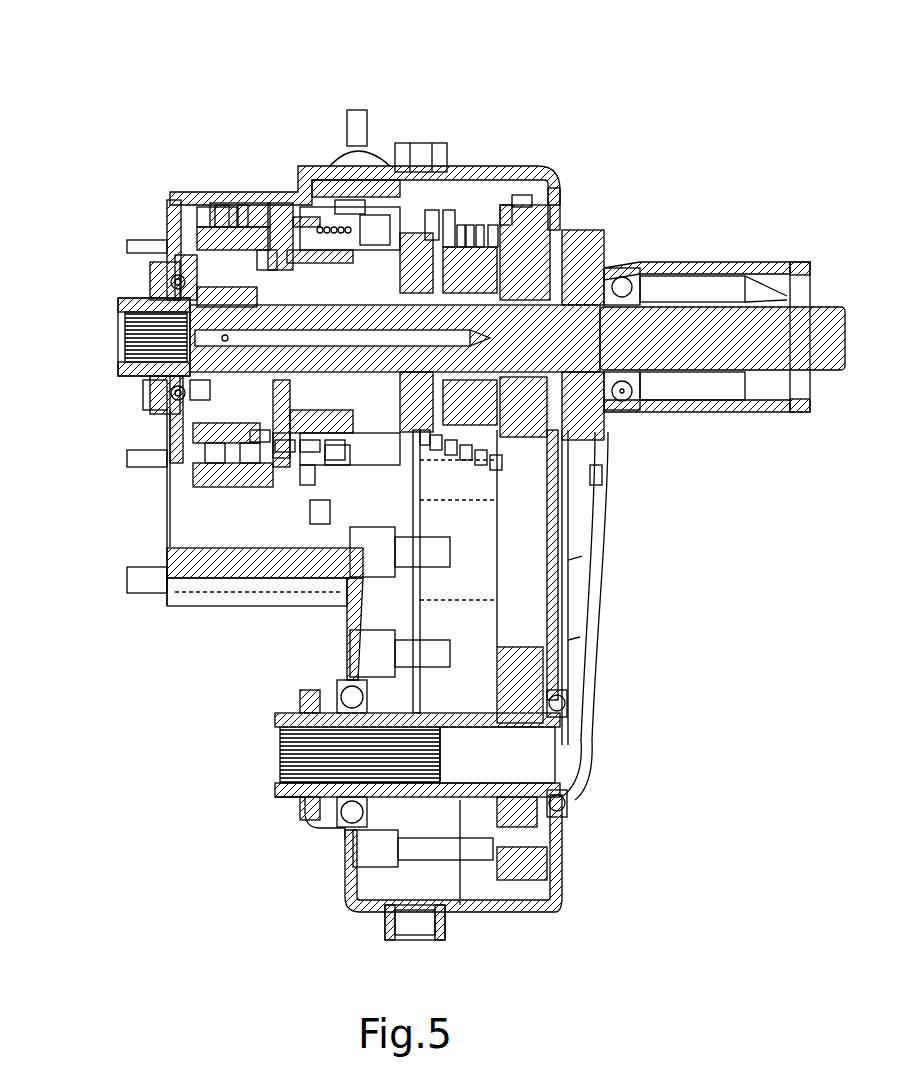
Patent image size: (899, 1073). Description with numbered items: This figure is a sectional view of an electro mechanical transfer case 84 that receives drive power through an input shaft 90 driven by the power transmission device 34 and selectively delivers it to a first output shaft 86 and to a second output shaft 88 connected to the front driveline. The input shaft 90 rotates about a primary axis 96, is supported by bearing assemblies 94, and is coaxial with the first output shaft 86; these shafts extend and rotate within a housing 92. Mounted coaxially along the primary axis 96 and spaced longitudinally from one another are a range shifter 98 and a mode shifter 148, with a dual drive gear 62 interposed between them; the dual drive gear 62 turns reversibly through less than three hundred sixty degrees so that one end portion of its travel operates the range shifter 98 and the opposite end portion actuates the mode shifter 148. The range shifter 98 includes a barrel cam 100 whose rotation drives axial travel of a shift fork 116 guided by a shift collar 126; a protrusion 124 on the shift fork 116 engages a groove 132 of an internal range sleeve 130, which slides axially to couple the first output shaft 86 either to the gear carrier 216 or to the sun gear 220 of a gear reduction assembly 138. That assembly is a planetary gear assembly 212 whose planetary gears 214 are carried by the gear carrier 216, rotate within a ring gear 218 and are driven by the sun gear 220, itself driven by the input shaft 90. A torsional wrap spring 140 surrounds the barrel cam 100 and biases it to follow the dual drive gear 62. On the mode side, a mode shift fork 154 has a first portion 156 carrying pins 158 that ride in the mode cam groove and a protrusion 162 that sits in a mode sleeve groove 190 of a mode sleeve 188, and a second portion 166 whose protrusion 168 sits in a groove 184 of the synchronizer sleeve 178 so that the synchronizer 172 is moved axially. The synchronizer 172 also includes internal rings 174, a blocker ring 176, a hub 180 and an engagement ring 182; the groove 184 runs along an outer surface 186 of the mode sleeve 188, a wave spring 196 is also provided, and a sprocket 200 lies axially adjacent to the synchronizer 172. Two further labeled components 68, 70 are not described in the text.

The power transmission device 34 is at (337, 465).
The dual drive gear 62 is at (350, 200).
The second clutch plate 68 is at (363, 222).
The clutch pack 70 is at (325, 213).
The electro mechanical transfer case 84 is at (628, 88).
The first output shaft 86 is at (200, 392).
The second output shaft 88 is at (540, 772).
The input shaft 90 is at (122, 306).
The housing 92 is at (535, 176).
The bearing assemblies 94 is at (150, 400).
The primary axis 96 is at (126, 352).
The range shifter 98 is at (282, 205).
The barrel cam 100 is at (285, 442).
The shift fork 116 is at (268, 250).
The protrusion 124 is at (306, 470).
The shift collar 126 is at (262, 432).
The internal range sleeve 130 is at (224, 205).
The groove 132 is at (246, 205).
The gear reduction assembly 138 is at (226, 212).
The torsional wrap spring 140 is at (318, 510).
The mode shifter 148 is at (471, 228).
The mode shift fork 154 is at (430, 213).
The first portion 156 is at (607, 433).
The first and second pin 158 is at (372, 178).
The protrusion 162 is at (392, 205).
The second portion 166 is at (481, 228).
The protrusion 168 is at (461, 228).
The synchronizer 172 is at (450, 215).
The internal rings 174 is at (492, 228).
The blocker ring 176 is at (506, 215).
The synchronizer sleeve 178 is at (495, 462).
The hub 180 is at (518, 200).
The engagement ring 182 is at (596, 472).
The groove 184 is at (480, 458).
The outer surface 186 is at (465, 452).
The mode sleeve 188 is at (435, 442).
The mode sleeve groove 190 is at (420, 437).
The wave spring 196 is at (450, 447).
The sprocket 200 is at (540, 258).
The planetary gear assembly 212 is at (330, 455).
The planetary gears 214 is at (290, 415).
The gear carrier 216 is at (250, 425).
The ring gear 218 is at (310, 440).
The sun gear 220 is at (215, 437).